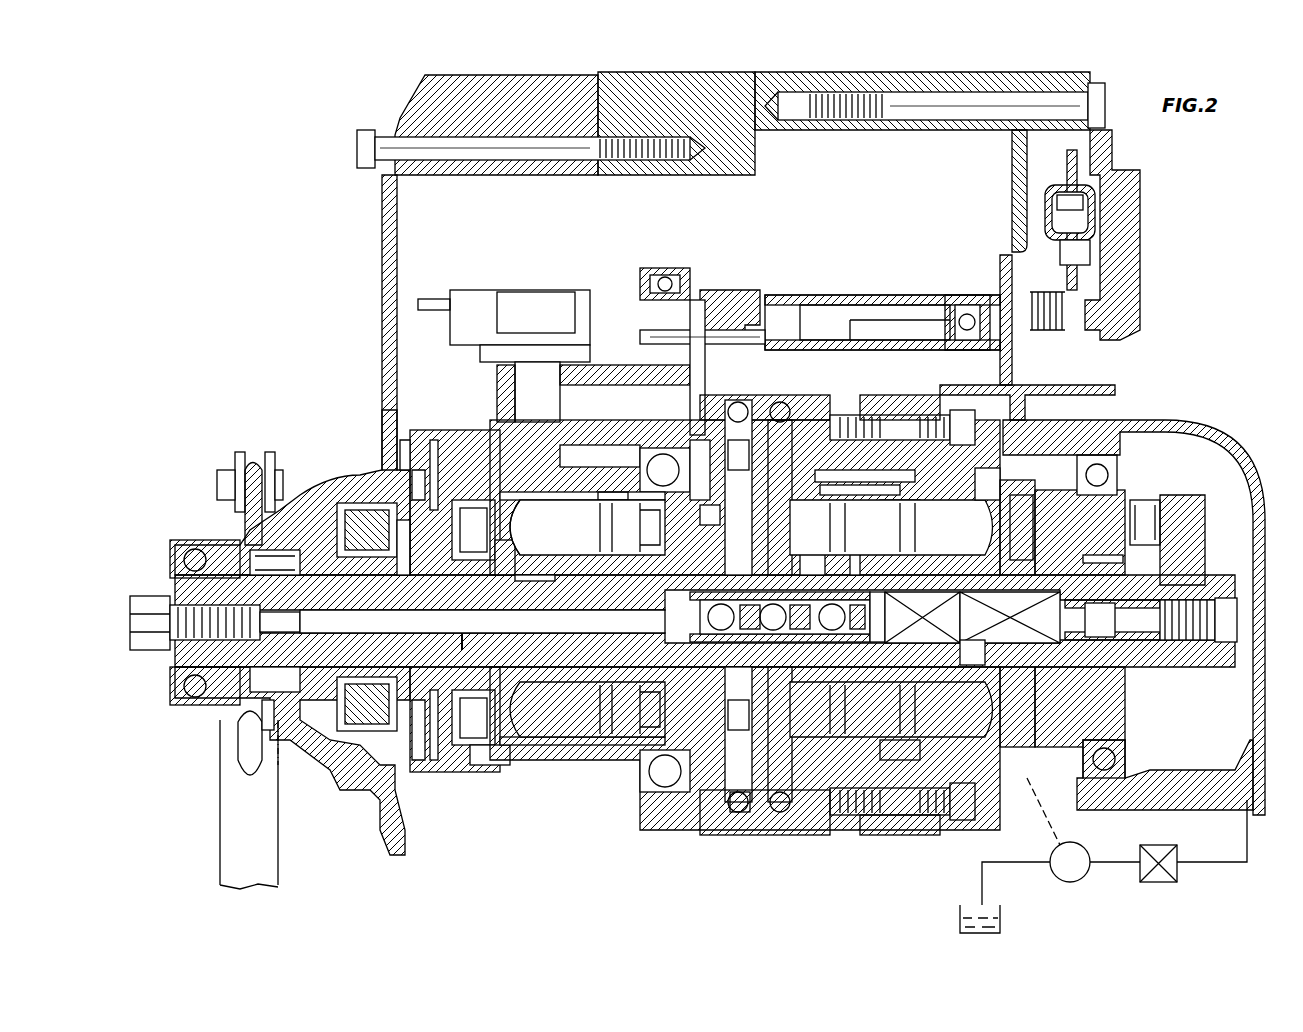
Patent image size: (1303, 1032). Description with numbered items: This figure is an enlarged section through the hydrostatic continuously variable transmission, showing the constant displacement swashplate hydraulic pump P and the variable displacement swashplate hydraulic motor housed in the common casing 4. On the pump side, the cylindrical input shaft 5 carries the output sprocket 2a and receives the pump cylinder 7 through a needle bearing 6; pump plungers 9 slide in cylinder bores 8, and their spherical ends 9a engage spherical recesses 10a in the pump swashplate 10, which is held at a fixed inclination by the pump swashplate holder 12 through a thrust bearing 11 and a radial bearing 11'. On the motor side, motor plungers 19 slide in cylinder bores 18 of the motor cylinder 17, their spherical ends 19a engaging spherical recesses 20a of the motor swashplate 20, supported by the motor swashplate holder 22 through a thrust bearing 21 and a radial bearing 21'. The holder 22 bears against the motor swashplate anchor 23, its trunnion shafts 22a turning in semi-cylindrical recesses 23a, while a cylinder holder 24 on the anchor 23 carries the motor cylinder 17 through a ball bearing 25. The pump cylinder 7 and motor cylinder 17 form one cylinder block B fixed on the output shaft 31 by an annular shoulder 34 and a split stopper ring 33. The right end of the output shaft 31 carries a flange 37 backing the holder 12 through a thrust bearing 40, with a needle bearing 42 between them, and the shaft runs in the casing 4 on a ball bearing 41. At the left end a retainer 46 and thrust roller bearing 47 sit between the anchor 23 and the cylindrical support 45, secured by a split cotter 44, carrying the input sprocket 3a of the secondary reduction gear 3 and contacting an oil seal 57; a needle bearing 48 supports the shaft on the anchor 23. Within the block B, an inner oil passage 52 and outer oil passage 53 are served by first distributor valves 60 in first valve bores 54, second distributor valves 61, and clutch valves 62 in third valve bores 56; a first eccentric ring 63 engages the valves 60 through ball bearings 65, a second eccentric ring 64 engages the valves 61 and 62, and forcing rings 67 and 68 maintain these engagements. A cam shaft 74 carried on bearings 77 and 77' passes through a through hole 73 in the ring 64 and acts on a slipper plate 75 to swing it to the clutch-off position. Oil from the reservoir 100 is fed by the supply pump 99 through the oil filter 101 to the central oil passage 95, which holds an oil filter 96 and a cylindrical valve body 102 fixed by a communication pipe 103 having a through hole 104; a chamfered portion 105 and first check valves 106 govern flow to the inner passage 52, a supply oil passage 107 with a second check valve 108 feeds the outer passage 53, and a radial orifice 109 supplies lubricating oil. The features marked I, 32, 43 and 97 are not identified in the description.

The solenoid actuator I is at (604, 266).
The hydraulic pump P is at (1108, 430).
The cylinder block B is at (640, 745).
The output sprocket 2a is at (898, 395).
The secondary reduction gear 3 is at (213, 770).
The input sprocket 3a is at (244, 480).
The casing 4 is at (1152, 425).
The cylindrical input shaft 5 is at (918, 414).
The needle bearing 6 is at (878, 488).
The pump cylinder 7 is at (821, 547).
The cylinder bores 8 is at (920, 752).
The pump plungers 9 is at (935, 510).
The spherical end 9a is at (981, 653).
The pump swashplate 10 is at (1000, 556).
The spherical recess 10a is at (1005, 700).
The thrust bearing 11 is at (1021, 527).
The radial bearing 11' is at (991, 466).
The pump swashplate holder 12 is at (1055, 490).
The motor cylinder 17 is at (612, 498).
The cylinder bores 18 is at (584, 500).
The motor plungers 19 is at (587, 618).
The spherical end 19a is at (543, 527).
The motor swashplate 20 is at (473, 532).
The spherical recess 20a is at (503, 572).
The thrust bearing 21 is at (473, 708).
The radial bearing 21' is at (495, 776).
The motor swashplate holder 22 is at (438, 573).
The trunnion shafts 22a is at (438, 440).
The motor swashplate anchor 23 is at (415, 445).
The semi-cylindrical recesses 23a is at (412, 478).
The cylinder holder 24 is at (625, 440).
The ball bearing 25 is at (660, 450).
The output shaft 31 is at (705, 621).
The shaft bore 32 is at (568, 580).
The split stopper ring 33 is at (532, 580).
The annular shoulder 34 is at (645, 575).
The flange 37 is at (1200, 528).
The thrust bearing 40 is at (1142, 505).
The ball bearing 41 is at (1120, 760).
The needle bearing 42 is at (1100, 555).
The seal 43 is at (265, 572).
The split cotter 44 is at (210, 560).
The cylindrical support 45 is at (345, 560).
The retainer 46 is at (355, 478).
The thrust roller bearing 47 is at (365, 755).
The needle bearing 48 is at (395, 572).
The inner oil passage 52 is at (760, 605).
The outer oil passage 53 is at (705, 518).
The first valve bores 54 is at (845, 475).
The third valve bores 56 is at (745, 745).
The oil seal 57 is at (268, 735).
The first distributor valves 60 is at (808, 636).
The second distributor valves 61 is at (690, 450).
The clutch valves 62 is at (735, 712).
The first eccentric ring 63 is at (810, 398).
The second eccentric ring 64 is at (748, 343).
The ball bearings 65 is at (792, 428).
The first forcing ring 67 is at (775, 864).
The second forcing ring 68 is at (712, 822).
The through hole 73 is at (730, 408).
The cam shaft 74 is at (838, 318).
The slipper plate 75 is at (757, 298).
The bearing 77 is at (665, 266).
The bearing 77' is at (952, 300).
The central oil passage 95 is at (922, 617).
The oil filter 96 is at (1046, 626).
The pipe 97 is at (1215, 862).
The supply pump 99 is at (1070, 843).
The oil reservoir 100 is at (958, 915).
The oil filter 101 is at (1155, 845).
The cylindrical valve body 102 is at (846, 605).
The communication pipe 103 is at (770, 630).
The through hole 104 is at (796, 605).
The chamfered portion 105 is at (722, 630).
The first check valves 106 is at (722, 600).
The supply oil passage 107 is at (885, 600).
The second check valve 108 is at (866, 554).
The radial orifice 109 is at (1052, 640).